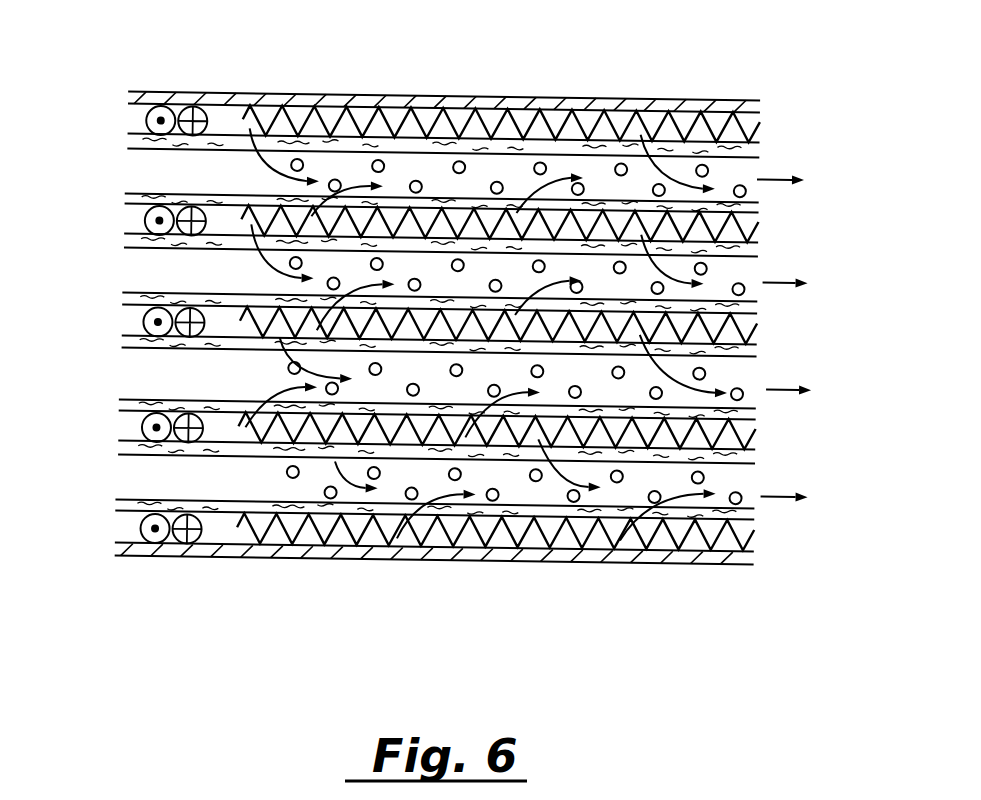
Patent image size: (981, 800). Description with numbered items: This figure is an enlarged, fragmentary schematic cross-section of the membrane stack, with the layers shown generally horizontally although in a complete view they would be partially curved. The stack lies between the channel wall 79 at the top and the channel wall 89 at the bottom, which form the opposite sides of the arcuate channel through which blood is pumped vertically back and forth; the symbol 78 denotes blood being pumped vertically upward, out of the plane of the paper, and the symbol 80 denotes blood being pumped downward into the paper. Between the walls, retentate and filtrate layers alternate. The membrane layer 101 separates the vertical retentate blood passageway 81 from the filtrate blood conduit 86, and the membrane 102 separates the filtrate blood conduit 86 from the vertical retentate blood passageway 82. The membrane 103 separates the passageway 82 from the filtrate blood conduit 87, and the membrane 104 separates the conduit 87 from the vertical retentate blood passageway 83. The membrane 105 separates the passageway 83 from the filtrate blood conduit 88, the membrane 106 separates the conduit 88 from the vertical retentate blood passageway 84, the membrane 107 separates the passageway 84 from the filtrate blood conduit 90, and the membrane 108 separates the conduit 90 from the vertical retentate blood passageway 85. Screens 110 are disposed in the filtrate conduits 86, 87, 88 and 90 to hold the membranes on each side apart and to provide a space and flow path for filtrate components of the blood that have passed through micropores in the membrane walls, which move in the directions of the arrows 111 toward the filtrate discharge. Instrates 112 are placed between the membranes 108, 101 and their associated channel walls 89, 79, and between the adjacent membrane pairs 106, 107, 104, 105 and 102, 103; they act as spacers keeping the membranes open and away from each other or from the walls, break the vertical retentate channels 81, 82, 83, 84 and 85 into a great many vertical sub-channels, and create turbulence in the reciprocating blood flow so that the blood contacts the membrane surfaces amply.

The symbol for blood being pumped vertically upwardly 78 is at (159, 110).
The channel wall 79 is at (557, 96).
The symbol for blood being pumped downwardly 80 is at (180, 108).
The vertical retentate blood passageway 81 is at (762, 114).
The vertical retentate blood passageway 82 is at (743, 219).
The vertical retentate blood passageway 83 is at (755, 333).
The vertical retentate blood passageway 84 is at (755, 441).
The vertical retentate blood passageway 85 is at (750, 544).
The filtrate blood conduit 86 is at (740, 173).
The filtrate blood conduit 87 is at (738, 268).
The filtrate blood conduit 88 is at (740, 376).
The channel wall 89 is at (624, 558).
The filtrate blood conduit 90 is at (728, 484).
The membrane layer 101 is at (130, 146).
The membrane 102 is at (121, 196).
The membrane 103 is at (121, 242).
The membrane 104 is at (121, 296).
The membrane 105 is at (118, 341).
The membrane 106 is at (119, 401).
The membrane 107 is at (119, 442).
The membrane 108 is at (119, 502).
The screens 110 is at (455, 258).
The arrows 111 is at (239, 227).
The instrates 112 is at (635, 131).